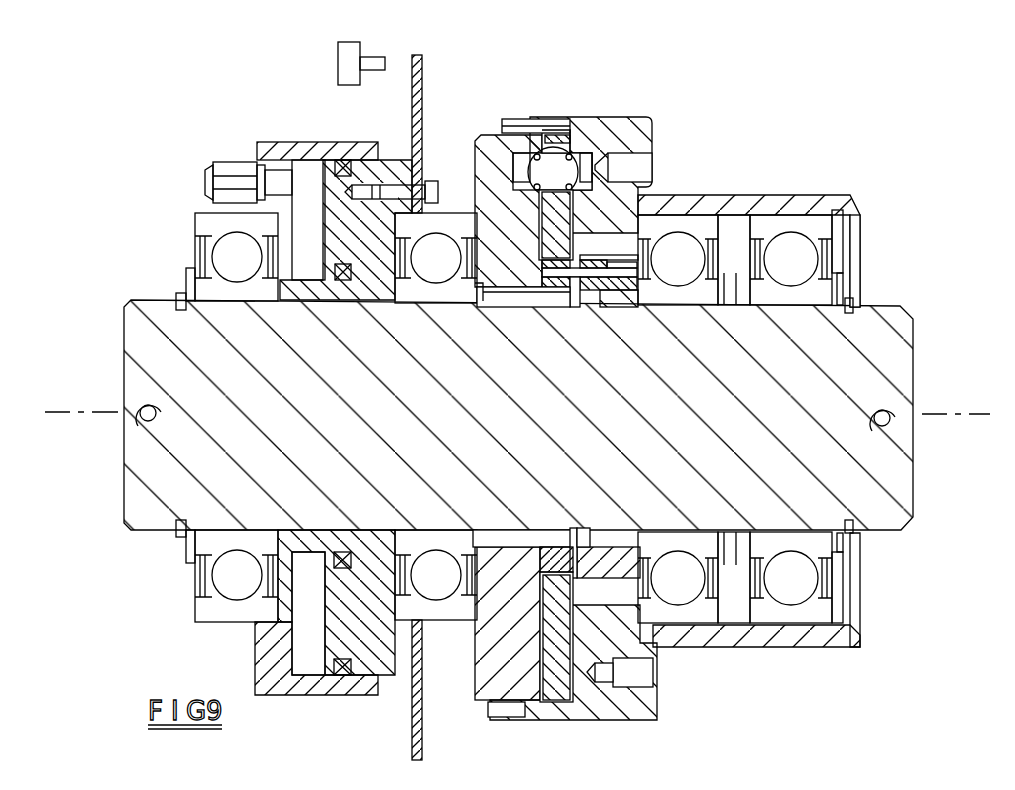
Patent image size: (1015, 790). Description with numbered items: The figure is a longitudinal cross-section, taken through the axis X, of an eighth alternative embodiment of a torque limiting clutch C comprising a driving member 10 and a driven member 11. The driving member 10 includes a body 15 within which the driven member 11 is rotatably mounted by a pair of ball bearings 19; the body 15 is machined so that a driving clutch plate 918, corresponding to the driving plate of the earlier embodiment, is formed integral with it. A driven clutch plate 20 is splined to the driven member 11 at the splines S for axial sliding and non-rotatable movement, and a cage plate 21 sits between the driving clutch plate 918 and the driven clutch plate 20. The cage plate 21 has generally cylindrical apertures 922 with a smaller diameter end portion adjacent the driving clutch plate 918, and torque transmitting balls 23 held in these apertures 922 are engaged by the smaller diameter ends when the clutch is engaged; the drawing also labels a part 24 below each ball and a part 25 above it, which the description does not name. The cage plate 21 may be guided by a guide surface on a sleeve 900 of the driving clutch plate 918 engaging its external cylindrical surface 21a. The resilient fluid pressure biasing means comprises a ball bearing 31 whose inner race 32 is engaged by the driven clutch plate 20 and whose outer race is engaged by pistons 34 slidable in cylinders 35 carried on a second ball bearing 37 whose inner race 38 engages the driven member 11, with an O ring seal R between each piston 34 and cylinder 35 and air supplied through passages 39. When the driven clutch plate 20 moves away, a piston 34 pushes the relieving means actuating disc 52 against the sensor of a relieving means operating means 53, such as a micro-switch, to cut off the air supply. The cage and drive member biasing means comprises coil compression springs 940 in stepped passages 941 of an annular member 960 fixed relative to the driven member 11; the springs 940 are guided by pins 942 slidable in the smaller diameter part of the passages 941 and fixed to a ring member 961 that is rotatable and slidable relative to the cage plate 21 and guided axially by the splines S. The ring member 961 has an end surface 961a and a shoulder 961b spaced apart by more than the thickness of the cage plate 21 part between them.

The driving member 10 is at (838, 199).
The driven member 11 is at (136, 532).
The body 15 is at (638, 118).
The ball bearings 19 is at (692, 306).
The driven clutch plate 20 is at (490, 148).
The cage plate 21 is at (553, 147).
The external cylindrical surface 21a is at (562, 147).
The balls 23 is at (553, 172).
The pin 24 is at (572, 185).
The cap 25 is at (546, 137).
The ball bearing 31 is at (448, 210).
The inner race 32 is at (420, 305).
The pistons 34 is at (200, 213).
The cylinders 35 is at (322, 142).
The second ball bearing 37 is at (184, 243).
The inner race 38 is at (238, 303).
The passages 39 is at (242, 165).
The relieving means actuating disc 52 is at (433, 50).
The relieving means operating means 53 is at (355, 47).
The sleeve 900 is at (545, 120).
The driving clutch plate 918 is at (582, 153).
The apertures 922 is at (490, 300).
The coil compression springs 940 is at (600, 278).
The stepped passages 941 is at (605, 264).
The pins 942 is at (556, 288).
The annular member 960 is at (607, 292).
The ring member 961 is at (548, 292).
The end surface 961a is at (543, 298).
The shoulder 961b is at (640, 180).
The torque limiting clutch C is at (741, 127).
The O ring seal R is at (346, 160).
The splines S is at (508, 307).
The axis X is at (514, 414).